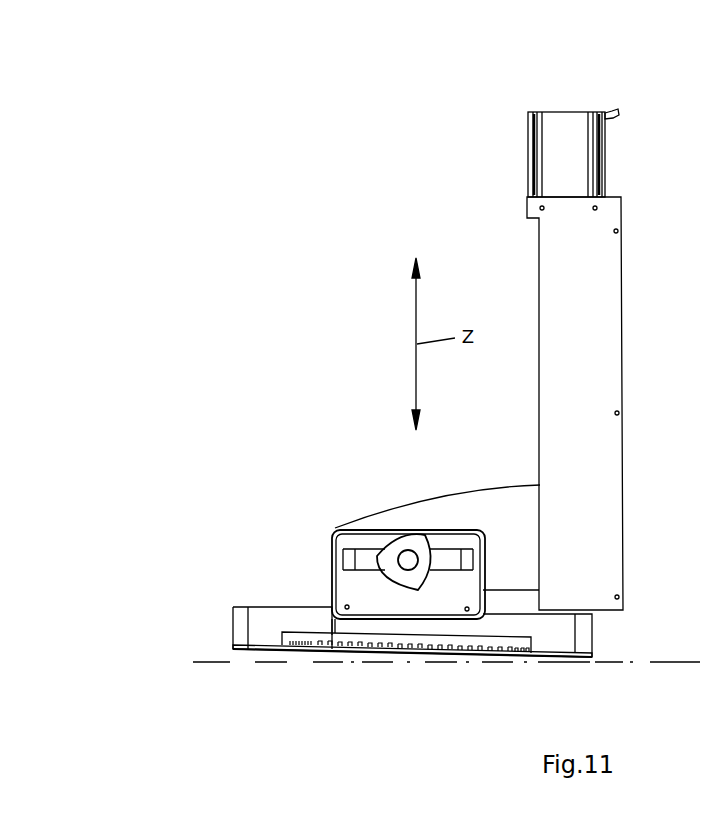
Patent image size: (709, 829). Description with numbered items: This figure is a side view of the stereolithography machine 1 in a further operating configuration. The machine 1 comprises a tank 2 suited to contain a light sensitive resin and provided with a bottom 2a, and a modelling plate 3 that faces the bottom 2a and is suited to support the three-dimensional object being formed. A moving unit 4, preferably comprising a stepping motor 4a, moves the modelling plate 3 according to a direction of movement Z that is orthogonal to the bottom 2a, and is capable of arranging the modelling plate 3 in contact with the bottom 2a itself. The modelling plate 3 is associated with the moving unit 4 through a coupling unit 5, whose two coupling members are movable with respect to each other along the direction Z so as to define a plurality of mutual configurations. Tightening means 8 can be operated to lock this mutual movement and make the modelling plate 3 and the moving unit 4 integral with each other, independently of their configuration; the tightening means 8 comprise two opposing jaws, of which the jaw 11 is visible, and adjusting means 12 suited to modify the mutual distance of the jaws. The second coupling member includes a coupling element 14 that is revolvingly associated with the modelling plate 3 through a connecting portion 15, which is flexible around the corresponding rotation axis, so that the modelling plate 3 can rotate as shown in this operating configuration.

The stereolithography machine 1 is at (622, 95).
The tank 2 is at (241, 627).
The bottom 2a is at (257, 642).
The modelling plate 3 is at (515, 648).
The moving unit 4 is at (630, 230).
The stepping motor 4a is at (578, 155).
The coupling unit 5 is at (402, 518).
The tightening means 8 is at (445, 543).
The jaw 11 is at (367, 558).
The adjusting means 12 is at (408, 593).
The coupling element 14 is at (433, 605).
The connecting portion 15 is at (355, 625).